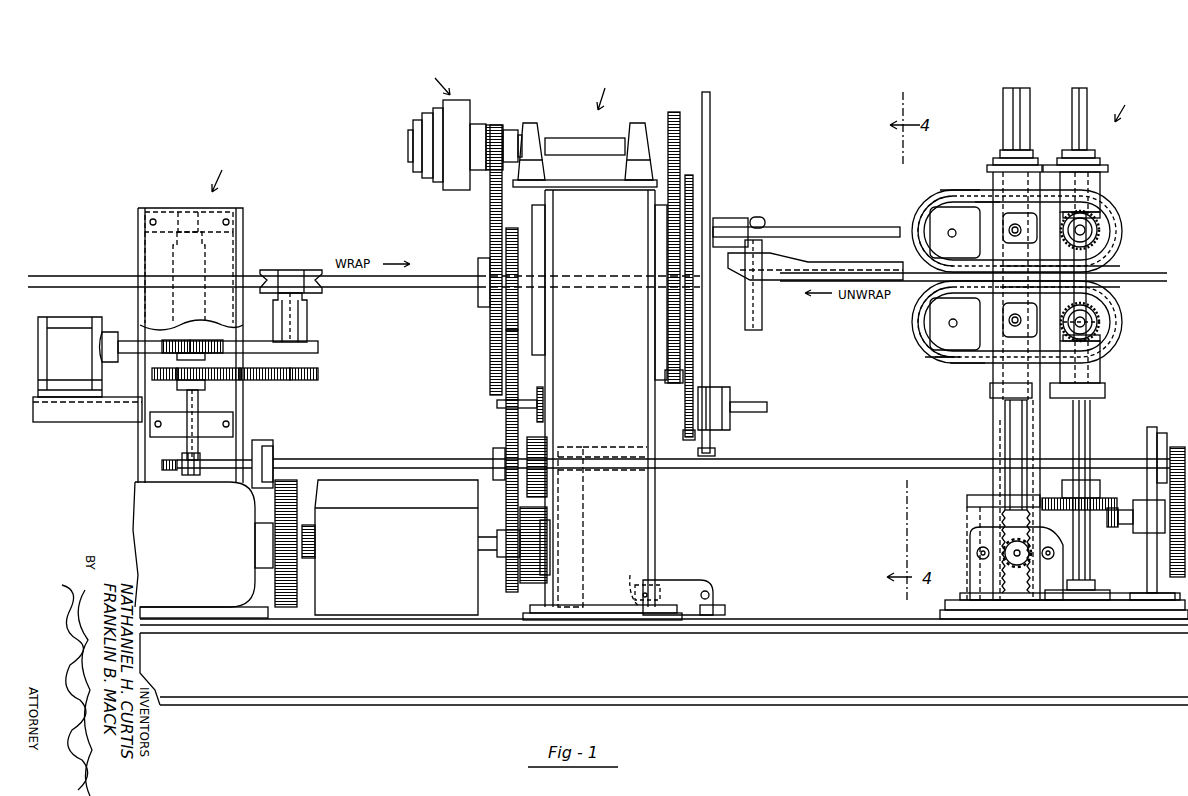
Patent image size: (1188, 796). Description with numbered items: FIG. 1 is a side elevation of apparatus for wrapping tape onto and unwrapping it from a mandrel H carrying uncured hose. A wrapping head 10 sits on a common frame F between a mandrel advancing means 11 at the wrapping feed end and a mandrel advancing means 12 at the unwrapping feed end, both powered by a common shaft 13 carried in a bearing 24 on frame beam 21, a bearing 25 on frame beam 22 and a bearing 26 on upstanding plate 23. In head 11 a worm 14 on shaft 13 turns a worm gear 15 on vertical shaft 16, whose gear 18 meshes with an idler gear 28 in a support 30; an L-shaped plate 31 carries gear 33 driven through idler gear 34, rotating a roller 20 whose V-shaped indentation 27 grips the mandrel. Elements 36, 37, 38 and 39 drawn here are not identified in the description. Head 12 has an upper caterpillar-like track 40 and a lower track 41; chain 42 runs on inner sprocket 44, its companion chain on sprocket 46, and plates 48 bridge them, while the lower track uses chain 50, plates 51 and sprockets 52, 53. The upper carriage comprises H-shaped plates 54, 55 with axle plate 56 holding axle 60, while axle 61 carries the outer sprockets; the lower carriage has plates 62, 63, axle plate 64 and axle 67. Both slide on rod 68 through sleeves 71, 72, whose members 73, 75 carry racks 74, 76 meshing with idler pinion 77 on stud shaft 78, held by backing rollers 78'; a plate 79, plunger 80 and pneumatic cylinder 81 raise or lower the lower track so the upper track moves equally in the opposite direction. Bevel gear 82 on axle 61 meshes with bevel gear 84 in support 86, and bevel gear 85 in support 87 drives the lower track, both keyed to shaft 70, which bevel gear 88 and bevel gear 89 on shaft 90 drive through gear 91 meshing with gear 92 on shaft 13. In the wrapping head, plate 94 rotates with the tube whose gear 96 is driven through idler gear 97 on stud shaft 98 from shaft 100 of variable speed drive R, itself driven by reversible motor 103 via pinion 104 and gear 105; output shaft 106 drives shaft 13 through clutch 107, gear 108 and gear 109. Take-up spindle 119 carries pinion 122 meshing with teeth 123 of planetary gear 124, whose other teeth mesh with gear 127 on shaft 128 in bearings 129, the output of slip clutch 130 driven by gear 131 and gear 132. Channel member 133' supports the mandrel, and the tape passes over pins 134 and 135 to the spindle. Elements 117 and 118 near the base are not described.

The wrapping head 10 is at (595, 339).
The mandrel advancing means 11 is at (225, 168).
The mandrel advancing means 12 is at (1130, 102).
The common shaft 13 is at (411, 464).
The worm 14 is at (190, 477).
The worm gear 15 is at (168, 472).
The vertical shaft 16 is at (187, 445).
The gear 18 is at (211, 381).
The mandrel advancing roller 20 is at (306, 270).
The upstanding frame beam 21 is at (138, 228).
The upstanding frame beam 22 is at (210, 248).
The upstanding plate 23 is at (1148, 612).
The bearing 24 is at (273, 453).
The bearing 25 is at (545, 440).
The bearing 26 is at (1160, 434).
The V-shaped indentation 27 is at (322, 288).
The idler gear 28 is at (152, 374).
The support 30 is at (152, 402).
The L-shaped plate 31 is at (318, 347).
The gear 33 is at (320, 372).
The idler gear 34 is at (265, 381).
The gear 36 is at (167, 338).
The motor 37 is at (70, 357).
The coupling 38 is at (122, 341).
The gear 39 is at (215, 338).
The upper caterpillar-like track 40 is at (1108, 220).
The lower caterpillar-like track 41 is at (1099, 330).
The chain 42 is at (928, 198).
The inner sprocket 44 is at (978, 196).
The inner sprocket 46 is at (920, 348).
The flat plates 48 is at (918, 225).
The chain 50 is at (950, 365).
The plates 51 is at (916, 330).
The sprocket 52 is at (970, 363).
The sprocket 53 is at (1073, 418).
The H-shaped plate 54 is at (955, 195).
The H-shaped plate 55 is at (920, 302).
The axle plate 56 is at (955, 232).
The axle 60 is at (943, 234).
The axle 61 is at (1105, 266).
The H-shaped plate 62 is at (1105, 292).
The H-shaped plate 63 is at (935, 362).
The axle plate 64 is at (950, 324).
The axle 67 is at (1118, 320).
The vertically extending rod 68 is at (1010, 89).
The drive shaft 70 is at (1078, 89).
The sleeve 71 is at (1043, 168).
The sleeve 72 is at (1000, 406).
The downwardly extending member 73 is at (1010, 222).
The rack 74 is at (980, 575).
The downwardly extending member 75 is at (1034, 441).
The rack 76 is at (1032, 512).
The idler pinion 77 is at (1025, 560).
The stud shaft 78 is at (1022, 600).
The backing rollers 78' is at (997, 543).
The plate 79 is at (1104, 390).
The plunger 80 is at (1010, 442).
The pneumatic cylinder 81 is at (975, 500).
The bevel gear 82 is at (1099, 232).
The bevel gear 84 is at (1088, 215).
The bevel gear 85 is at (1100, 343).
The support 86 is at (1100, 180).
The support 87 is at (1100, 375).
The bevel gear 88 is at (1095, 499).
The bevel gear 89 is at (1113, 528).
The shaft 90 is at (1140, 534).
The gear 91 is at (1160, 570).
The gear 92 is at (1177, 447).
The circular plate 94 is at (712, 452).
The gear 96 is at (506, 238).
The idler gear 97 is at (506, 362).
The stud shaft 98 is at (545, 405).
The shaft 100 is at (314, 545).
The reversible motor 103 is at (197, 598).
The pinion 104 is at (292, 560).
The gear 105 is at (296, 498).
The variable speed output shaft 106 is at (497, 557).
The clutch 107 is at (546, 521).
The gear 108 is at (515, 612).
The gear 109 is at (506, 422).
The bracket 117 is at (655, 590).
The bracket 118 is at (698, 583).
The take-up spindle shaft 119 is at (767, 411).
The pinion 122 is at (692, 441).
The set of teeth 123 is at (694, 185).
The planetary gear 124 is at (672, 386).
The gear 127 is at (675, 112).
The shaft 128 is at (553, 142).
The bearings 129 is at (637, 126).
The friction slip clutch 130 is at (447, 123).
The gear 131 is at (490, 315).
The gear 132 is at (495, 125).
The right angular channel member 133' is at (815, 261).
The elongated pin 134 is at (843, 227).
The second elongated pin 135 is at (762, 322).
The mandrel H is at (354, 289).
The Reeves variable speed drive R is at (402, 618).
The frame F is at (820, 637).